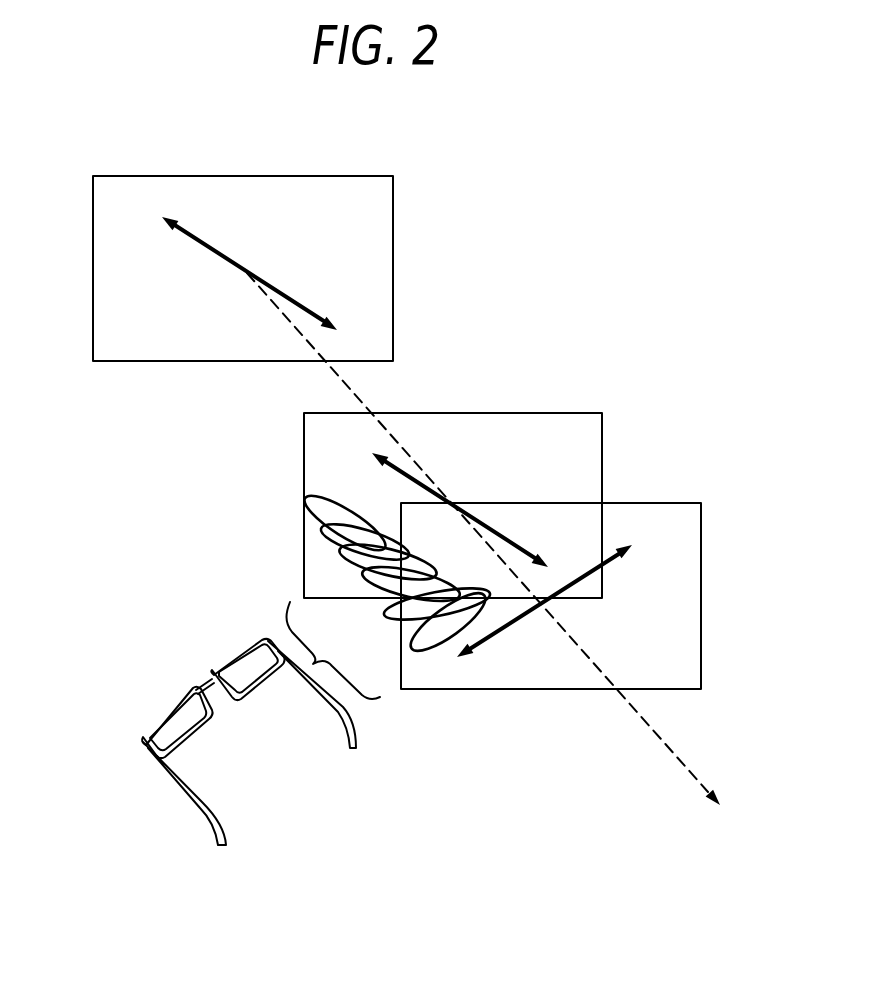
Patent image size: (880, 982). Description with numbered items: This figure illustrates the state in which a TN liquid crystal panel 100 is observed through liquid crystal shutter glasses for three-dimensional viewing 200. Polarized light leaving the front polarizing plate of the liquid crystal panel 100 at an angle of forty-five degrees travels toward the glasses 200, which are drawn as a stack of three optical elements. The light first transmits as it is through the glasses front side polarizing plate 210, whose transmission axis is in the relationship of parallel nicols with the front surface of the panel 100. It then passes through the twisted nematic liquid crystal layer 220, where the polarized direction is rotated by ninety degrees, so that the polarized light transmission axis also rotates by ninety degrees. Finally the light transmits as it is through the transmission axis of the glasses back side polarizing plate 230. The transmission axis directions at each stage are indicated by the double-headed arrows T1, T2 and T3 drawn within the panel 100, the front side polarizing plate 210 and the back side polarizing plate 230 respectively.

The TN liquid crystal panel 100 is at (291, 198).
The liquid crystal shutter glasses for 3D 200 is at (208, 672).
The glasses front side polarizing plate 210 is at (492, 425).
The twisted nematic liquid crystal layer 220 is at (323, 553).
The glasses back side polarizing plate 230 is at (520, 672).
The object direction at time T1 is at (204, 248).
The object direction at time T2 is at (502, 532).
The object direction at time T3 is at (585, 583).